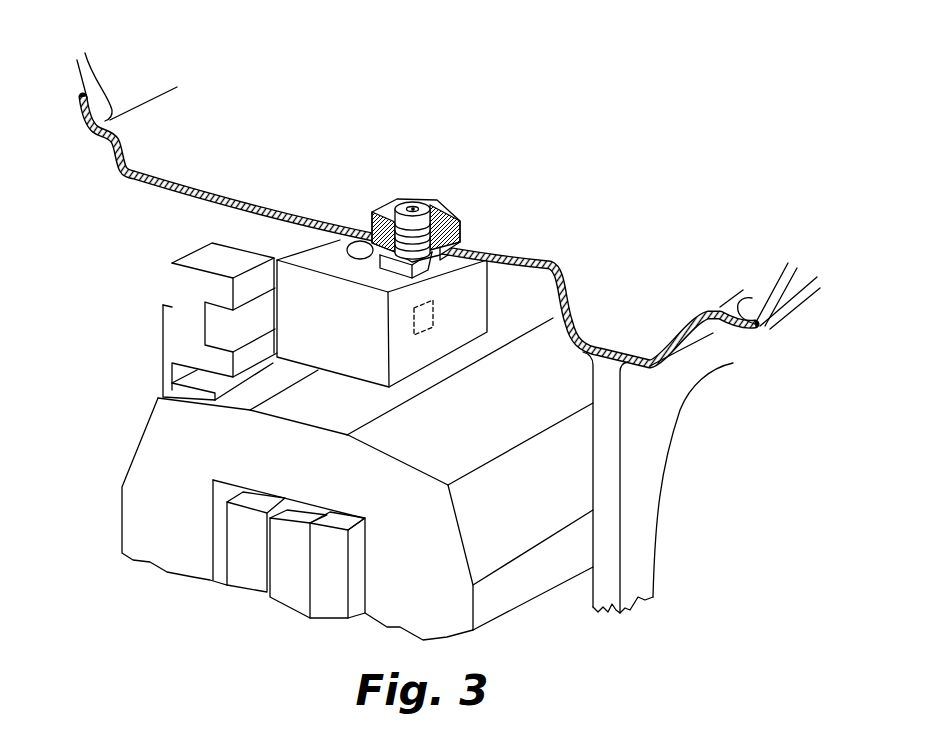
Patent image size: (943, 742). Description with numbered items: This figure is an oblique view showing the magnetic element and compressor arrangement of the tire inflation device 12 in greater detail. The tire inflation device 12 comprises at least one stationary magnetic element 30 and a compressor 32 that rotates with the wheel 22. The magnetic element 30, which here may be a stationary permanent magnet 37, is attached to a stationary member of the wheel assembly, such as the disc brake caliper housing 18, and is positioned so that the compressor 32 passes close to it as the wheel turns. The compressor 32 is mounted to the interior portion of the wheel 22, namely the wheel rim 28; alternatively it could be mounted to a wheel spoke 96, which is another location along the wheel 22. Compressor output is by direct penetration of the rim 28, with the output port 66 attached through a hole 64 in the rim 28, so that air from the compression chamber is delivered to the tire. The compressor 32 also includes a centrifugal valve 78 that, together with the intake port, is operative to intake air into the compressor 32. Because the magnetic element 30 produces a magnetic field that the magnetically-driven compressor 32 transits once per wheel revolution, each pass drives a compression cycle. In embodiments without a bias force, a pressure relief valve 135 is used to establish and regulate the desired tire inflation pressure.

The tire inflation device 12 is at (297, 168).
The disc brake caliper housing 18 is at (140, 435).
The wheel 22 is at (605, 350).
The wheel rim 28 is at (207, 190).
The magnetic element 30 is at (169, 314).
The compressor 32 is at (477, 300).
The stationary permanent magnet 37 is at (176, 303).
The hole 64 is at (450, 247).
The output port 66 is at (415, 205).
The centrifugal valve 78 is at (358, 248).
The wheel spoke 96 is at (640, 493).
The pressure relief valve 135 is at (437, 317).